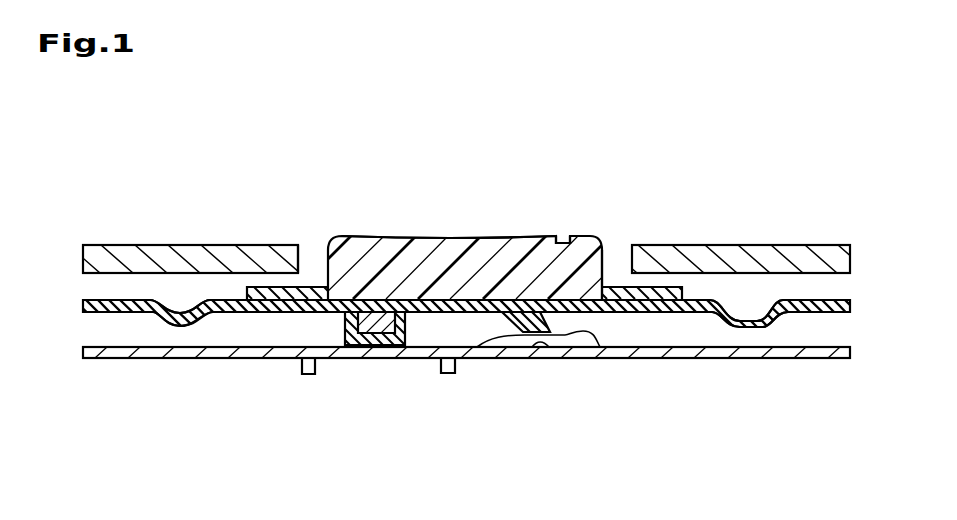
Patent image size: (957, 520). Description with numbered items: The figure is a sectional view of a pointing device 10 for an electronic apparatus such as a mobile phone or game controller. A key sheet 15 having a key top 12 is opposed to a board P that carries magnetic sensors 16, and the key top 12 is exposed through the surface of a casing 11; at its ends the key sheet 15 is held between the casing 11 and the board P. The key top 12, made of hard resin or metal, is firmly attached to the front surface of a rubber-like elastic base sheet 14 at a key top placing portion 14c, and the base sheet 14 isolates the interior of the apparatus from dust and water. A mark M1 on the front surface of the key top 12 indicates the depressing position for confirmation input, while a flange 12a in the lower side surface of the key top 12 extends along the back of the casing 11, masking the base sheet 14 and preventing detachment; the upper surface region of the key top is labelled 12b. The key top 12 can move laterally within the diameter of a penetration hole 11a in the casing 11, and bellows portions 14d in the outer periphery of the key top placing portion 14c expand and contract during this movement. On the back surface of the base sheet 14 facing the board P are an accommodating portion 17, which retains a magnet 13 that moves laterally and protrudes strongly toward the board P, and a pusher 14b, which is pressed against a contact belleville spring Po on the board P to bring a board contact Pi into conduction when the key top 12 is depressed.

The pointing device 10 is at (573, 172).
The casing 11 is at (157, 245).
The penetration hole 11a is at (313, 248).
The key top 12 is at (370, 236).
The flange 12a is at (603, 286).
The upper surface of key top 12b is at (490, 237).
The mark M1 is at (562, 240).
The base sheet 14 is at (138, 313).
The pusher 14b is at (505, 348).
The key top placing portion 14c is at (442, 297).
The bellows portions 14d is at (207, 318).
The magnet 13 is at (392, 346).
The accommodating portion 17 is at (355, 335).
The key sheet 15 is at (803, 316).
The magnetic sensors 16 is at (300, 365).
The board P is at (104, 360).
The board contact Pi is at (545, 345).
The contact belleville spring Po is at (590, 350).